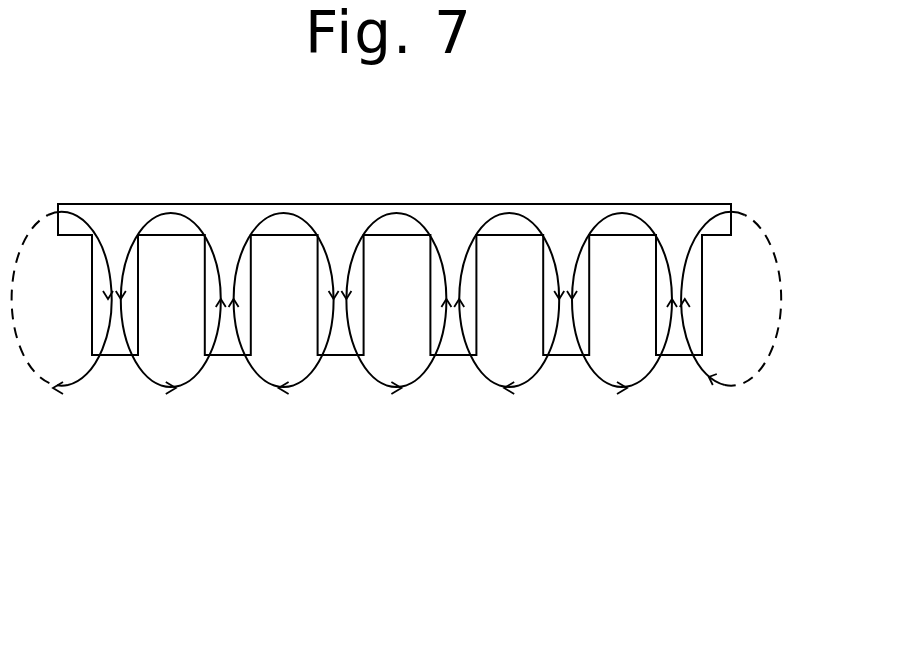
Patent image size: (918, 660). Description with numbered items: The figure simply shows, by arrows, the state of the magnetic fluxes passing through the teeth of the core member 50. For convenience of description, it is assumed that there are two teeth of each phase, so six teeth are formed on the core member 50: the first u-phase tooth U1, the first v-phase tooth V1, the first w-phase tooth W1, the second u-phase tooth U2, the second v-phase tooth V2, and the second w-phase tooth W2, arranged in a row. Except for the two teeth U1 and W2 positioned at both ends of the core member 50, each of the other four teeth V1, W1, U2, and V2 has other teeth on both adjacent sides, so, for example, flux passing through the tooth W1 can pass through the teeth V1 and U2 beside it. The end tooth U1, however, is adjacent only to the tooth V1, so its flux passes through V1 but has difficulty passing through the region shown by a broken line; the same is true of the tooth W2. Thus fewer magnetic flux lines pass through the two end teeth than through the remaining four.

The core member 50 is at (734, 197).
The u1-phase tooth U1 is at (113, 218).
The v1-phase tooth V1 is at (228, 225).
The w1-phase tooth W1 is at (340, 223).
The u2-phase tooth U2 is at (453, 222).
The v2-phase tooth V2 is at (567, 225).
The w2-phase tooth W2 is at (683, 230).